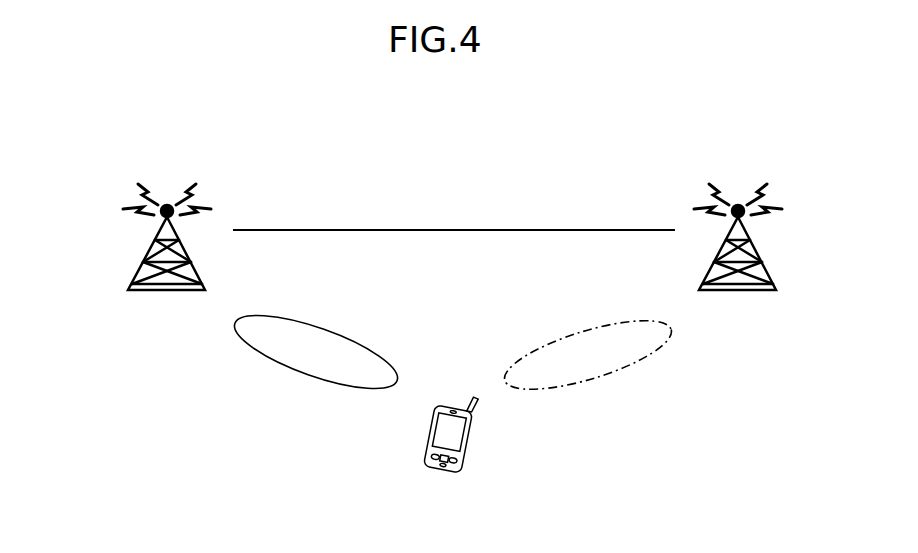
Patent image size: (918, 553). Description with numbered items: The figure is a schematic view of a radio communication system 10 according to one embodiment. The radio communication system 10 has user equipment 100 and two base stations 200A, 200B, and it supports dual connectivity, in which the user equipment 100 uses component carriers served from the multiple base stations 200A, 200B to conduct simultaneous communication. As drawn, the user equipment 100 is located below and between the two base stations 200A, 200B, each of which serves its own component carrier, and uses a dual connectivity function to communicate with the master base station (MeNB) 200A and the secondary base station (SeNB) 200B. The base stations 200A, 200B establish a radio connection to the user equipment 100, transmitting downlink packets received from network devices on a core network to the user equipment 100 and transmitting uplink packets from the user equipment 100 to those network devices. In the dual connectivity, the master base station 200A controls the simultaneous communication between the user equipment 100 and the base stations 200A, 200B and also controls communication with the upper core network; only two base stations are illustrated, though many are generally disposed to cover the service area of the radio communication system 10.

The radio communication system 10 is at (50, 136).
The master base station (MeNB) 200A is at (146, 263).
The secondary base station (SeNB) 200B is at (764, 261).
The user equipment 100 is at (470, 449).